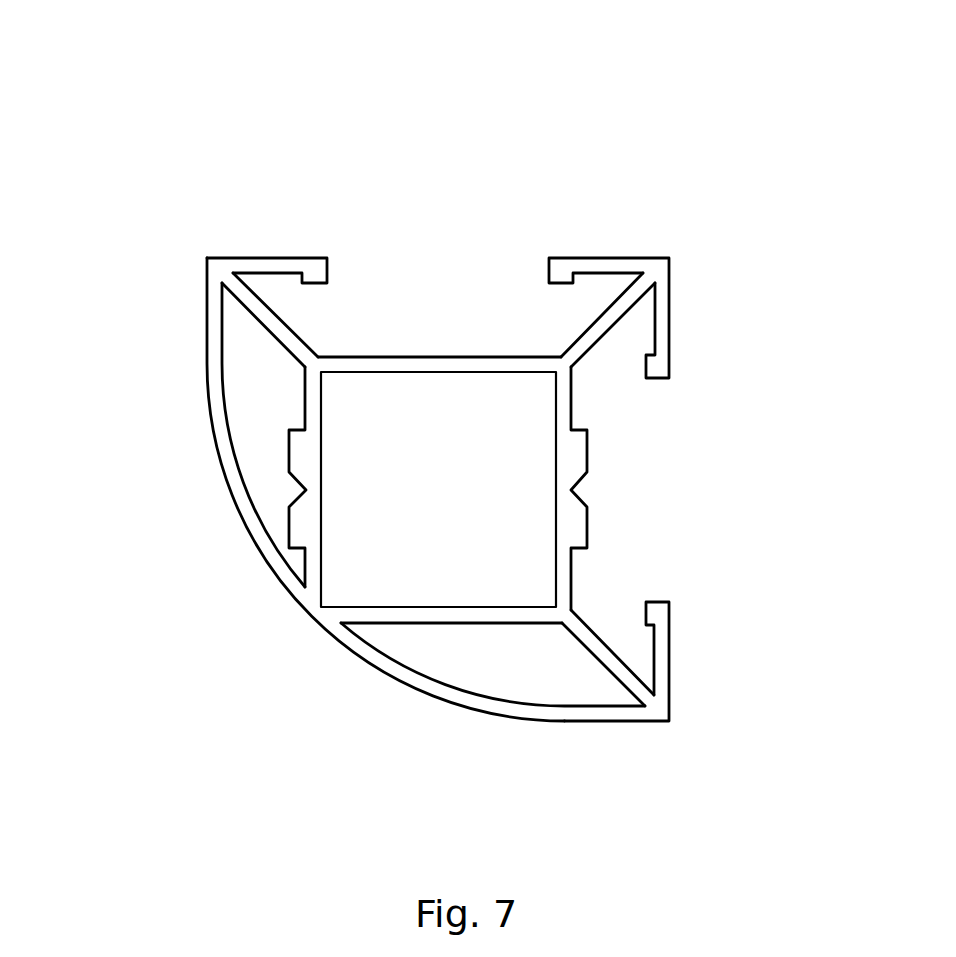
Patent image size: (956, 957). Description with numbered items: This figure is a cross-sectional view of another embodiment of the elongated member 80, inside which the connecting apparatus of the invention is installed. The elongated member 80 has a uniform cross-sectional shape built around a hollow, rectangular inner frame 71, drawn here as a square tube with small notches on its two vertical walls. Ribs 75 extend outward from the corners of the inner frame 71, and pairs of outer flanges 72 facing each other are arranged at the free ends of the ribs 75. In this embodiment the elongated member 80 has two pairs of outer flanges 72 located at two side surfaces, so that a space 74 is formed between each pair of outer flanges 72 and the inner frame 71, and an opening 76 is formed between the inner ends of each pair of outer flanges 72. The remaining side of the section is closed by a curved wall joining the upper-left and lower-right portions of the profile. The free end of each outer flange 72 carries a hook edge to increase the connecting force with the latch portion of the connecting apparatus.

The elongated member 80 is at (152, 197).
The inner frame 71 is at (437, 356).
The outer flanges 72 is at (273, 258).
The space 74 is at (610, 588).
The ribs 75 is at (607, 320).
The opening 76 is at (660, 398).